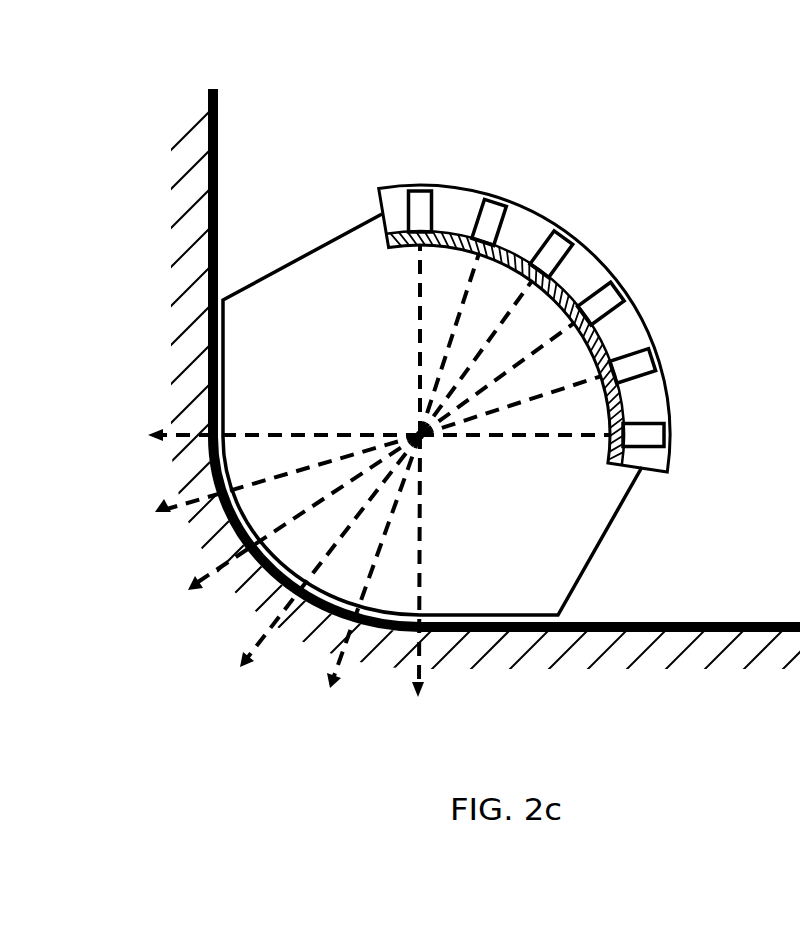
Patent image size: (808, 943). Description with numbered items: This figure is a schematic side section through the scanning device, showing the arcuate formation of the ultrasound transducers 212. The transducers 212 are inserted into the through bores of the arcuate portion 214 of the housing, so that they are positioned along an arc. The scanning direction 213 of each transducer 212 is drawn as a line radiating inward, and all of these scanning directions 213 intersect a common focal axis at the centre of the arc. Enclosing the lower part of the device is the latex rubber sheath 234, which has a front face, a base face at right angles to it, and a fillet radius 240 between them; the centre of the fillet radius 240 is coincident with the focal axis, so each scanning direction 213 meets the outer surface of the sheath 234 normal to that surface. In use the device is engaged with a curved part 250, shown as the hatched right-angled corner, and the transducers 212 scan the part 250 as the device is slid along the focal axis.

The ultrasound transducers 212 is at (493, 198).
The scanning directions 213 is at (520, 365).
The arcuate portion 214 is at (507, 242).
The latex rubber sheath 234 is at (605, 530).
The fillet radius 240 is at (262, 555).
The curved part 250 is at (637, 632).